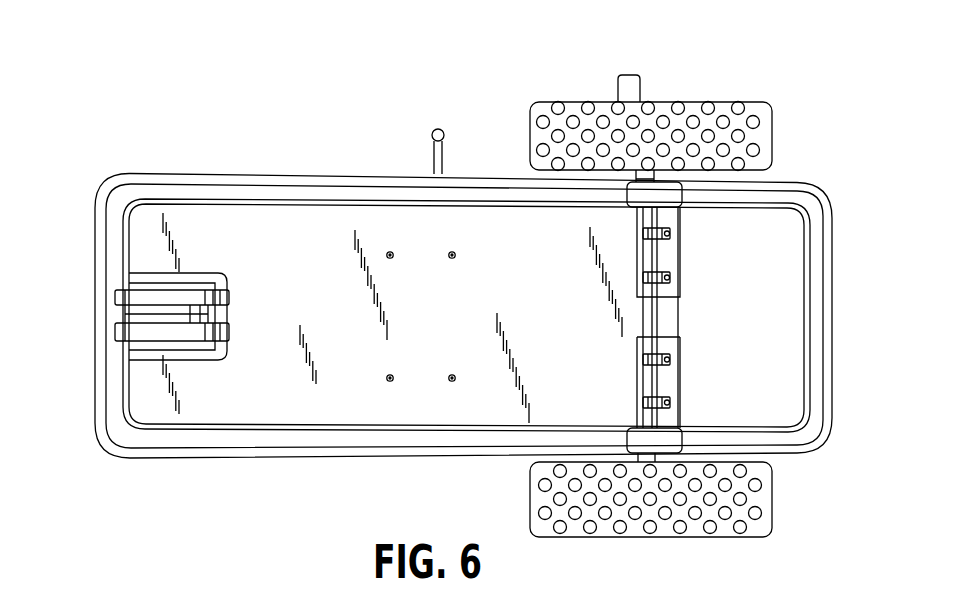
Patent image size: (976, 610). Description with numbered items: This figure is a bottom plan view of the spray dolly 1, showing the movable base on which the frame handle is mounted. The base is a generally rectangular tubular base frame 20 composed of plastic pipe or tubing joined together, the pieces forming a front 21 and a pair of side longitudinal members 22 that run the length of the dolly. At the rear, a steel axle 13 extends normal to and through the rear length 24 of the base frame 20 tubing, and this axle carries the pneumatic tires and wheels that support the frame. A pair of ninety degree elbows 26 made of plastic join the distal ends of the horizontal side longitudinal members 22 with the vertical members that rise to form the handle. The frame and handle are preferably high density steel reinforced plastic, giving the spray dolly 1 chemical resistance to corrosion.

The spray dolly 1 is at (115, 169).
The tubular base frame 20 is at (227, 160).
The front 21 is at (108, 270).
The side longitudinal members 22 is at (326, 190).
The rear length 24 is at (823, 299).
The steel axle 13 is at (650, 311).
The ninety degree elbows 26 is at (677, 193).